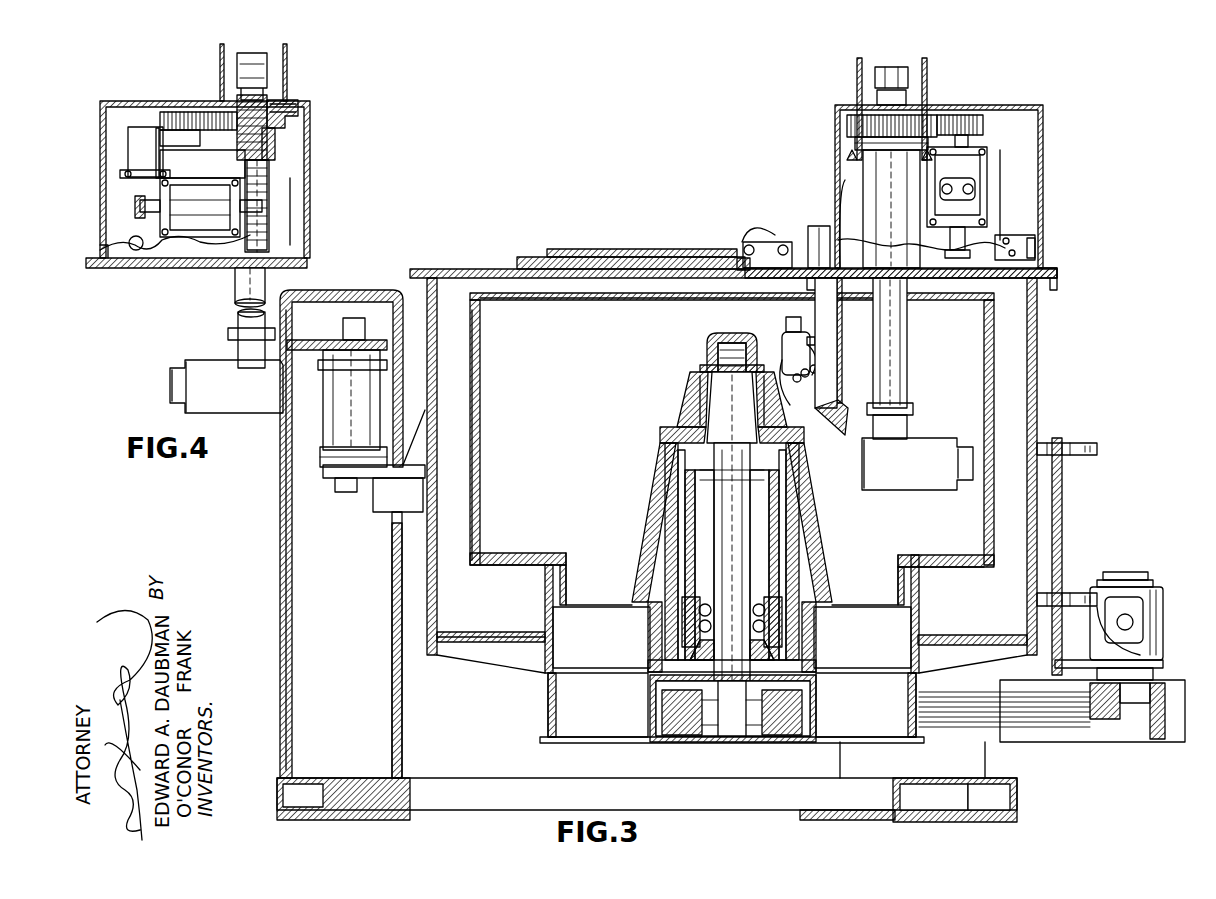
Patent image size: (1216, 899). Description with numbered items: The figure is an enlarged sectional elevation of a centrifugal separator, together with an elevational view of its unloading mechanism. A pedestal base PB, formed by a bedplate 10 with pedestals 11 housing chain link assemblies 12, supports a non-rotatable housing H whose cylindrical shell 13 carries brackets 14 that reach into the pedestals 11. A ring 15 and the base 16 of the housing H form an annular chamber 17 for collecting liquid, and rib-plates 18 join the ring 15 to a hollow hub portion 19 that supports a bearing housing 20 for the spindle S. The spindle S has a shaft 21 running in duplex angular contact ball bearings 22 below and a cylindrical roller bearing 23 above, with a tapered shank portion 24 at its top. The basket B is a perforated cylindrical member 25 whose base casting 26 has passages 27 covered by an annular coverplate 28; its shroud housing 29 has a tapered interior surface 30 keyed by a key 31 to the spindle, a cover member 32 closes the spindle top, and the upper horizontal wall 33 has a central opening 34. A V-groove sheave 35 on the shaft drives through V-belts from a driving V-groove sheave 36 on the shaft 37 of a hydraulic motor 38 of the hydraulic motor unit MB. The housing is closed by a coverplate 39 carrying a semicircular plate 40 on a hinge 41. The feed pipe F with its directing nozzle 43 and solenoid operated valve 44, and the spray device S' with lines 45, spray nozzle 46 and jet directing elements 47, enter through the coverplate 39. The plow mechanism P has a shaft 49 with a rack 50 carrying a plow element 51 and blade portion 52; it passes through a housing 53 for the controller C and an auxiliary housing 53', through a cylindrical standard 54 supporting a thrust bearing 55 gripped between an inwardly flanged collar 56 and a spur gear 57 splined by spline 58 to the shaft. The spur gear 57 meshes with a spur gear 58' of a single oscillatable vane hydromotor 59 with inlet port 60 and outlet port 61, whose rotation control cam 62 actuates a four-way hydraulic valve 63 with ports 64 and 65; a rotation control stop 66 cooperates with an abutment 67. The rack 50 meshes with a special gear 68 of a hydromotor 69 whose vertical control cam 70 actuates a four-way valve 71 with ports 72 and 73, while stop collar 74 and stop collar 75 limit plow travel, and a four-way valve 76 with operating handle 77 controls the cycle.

In FIG. 3, the bedplate 10 is at (410, 815).
In FIG. 3, the pedestals 11 is at (280, 582).
In FIG. 3, the chain link assemblies 12 is at (343, 393).
In FIG. 3, the cylindrical shell 13 is at (420, 567).
In FIG. 3, the brackets 14 is at (373, 509).
In FIG. 3, the ring 15 is at (545, 678).
In FIG. 3, the base 16 is at (484, 633).
In FIG. 3, the annular chamber 17 is at (520, 594).
In FIG. 3, the rib-plates 18 is at (598, 680).
In FIG. 3, the hollow hub portion 19 is at (650, 650).
In FIG. 3, the bearing housing 20 is at (682, 623).
In FIG. 3, the shaft 21 is at (740, 527).
In FIG. 3, the duplex angular contact ball bearings 22 is at (770, 642).
In FIG. 3, the cylindrical roller bearing 23 is at (778, 477).
In FIG. 3, the tapered shank portion 24 is at (700, 401).
In FIG. 3, the perforated cylindrical member 25 is at (481, 477).
In FIG. 3, the casting 26 is at (530, 553).
In FIG. 3, the passages 27 is at (610, 587).
In FIG. 3, the annular coverplate 28 is at (598, 553).
In FIG. 3, the shroud housing 29 is at (660, 433).
In FIG. 3, the tapered interior surface 30 is at (700, 419).
In FIG. 3, the key 31 is at (748, 383).
In FIG. 3, the cover member 32 is at (706, 350).
In FIG. 3, the upper horizontal wall 33 is at (531, 302).
In FIG. 3, the opening 34 is at (635, 302).
In FIG. 3, the V-groove sheave 35 is at (670, 740).
In FIG. 3, the driving V-groove sheave 36 is at (1100, 736).
In FIG. 3, the shaft 37 is at (1160, 669).
In FIG. 3, the hydraulic motor 38 is at (1165, 606).
In FIG. 4, the coverplate 39 is at (308, 263).
In FIG. 3, the coverplate 39 is at (470, 269).
In FIG. 3, the semicircular plate 40 is at (537, 257).
In FIG. 3, the hinge 41 is at (758, 225).
In FIG. 3, the directing nozzle 43 is at (848, 405).
In FIG. 3, the solenoid operated valve 44 is at (810, 228).
In FIG. 3, the lines 45 is at (800, 300).
In FIG. 3, the spray nozzle 46 is at (790, 391).
In FIG. 3, the jet directing elements 47 is at (816, 362).
In FIG. 4, the shaft 49 is at (234, 282).
In FIG. 3, the shaft 49 is at (908, 354).
In FIG. 4, the rack 50 is at (268, 73).
In FIG. 4, the plow element 51 is at (232, 404).
In FIG. 3, the plow element 51 is at (930, 490).
In FIG. 4, the blade portion 52 is at (172, 386).
In FIG. 3, the blade portion 52 is at (966, 482).
In FIG. 4, the housing 53 is at (223, 179).
In FIG. 3, the housing 53 is at (958, 186).
In FIG. 4, the auxiliary housing 53' is at (299, 72).
In FIG. 3, the auxiliary housing 53' is at (918, 109).
In FIG. 4, the cylindrical standard 54 is at (270, 160).
In FIG. 3, the cylindrical standard 54 is at (870, 173).
In FIG. 4, the thrust bearing 55 is at (276, 135).
In FIG. 3, the thrust bearing 55 is at (855, 146).
In FIG. 4, the inwardly flanged collar 56 is at (270, 150).
In FIG. 4, the spur gear 57 is at (290, 118).
In FIG. 3, the spur gear 57 is at (847, 127).
In FIG. 3, the spline 58 is at (858, 86).
In FIG. 4, the spur gear 58' is at (198, 105).
In FIG. 3, the spur gear 58' is at (971, 109).
In FIG. 3, the single oscillatable vane hydromotor 59 is at (975, 151).
In FIG. 3, the inlet port 60 is at (955, 186).
In FIG. 3, the outlet port 61 is at (975, 194).
In FIG. 3, the rotation control cam 62 is at (950, 280).
In FIG. 3, the four-way hydraulic valve 63 is at (995, 278).
In FIG. 3, the port 64 is at (1010, 241).
In FIG. 3, the port 65 is at (1016, 253).
In FIG. 3, the rotation control stop 66 is at (960, 125).
In FIG. 3, the abutment 67 is at (940, 140).
In FIG. 4, the special gear 68 is at (262, 187).
In FIG. 4, the hydromotor 69 is at (205, 185).
In FIG. 4, the vertical control cam 70 is at (150, 204).
In FIG. 4, the four-way valve 71 is at (145, 128).
In FIG. 4, the inlet port 72 is at (128, 172).
In FIG. 4, the outlet port 73 is at (162, 176).
In FIG. 4, the stop collar 74 is at (288, 100).
In FIG. 3, the stop collar 74 is at (850, 112).
In FIG. 4, the stop collar 75 is at (228, 338).
In FIG. 3, the stop collar 75 is at (867, 420).
In FIG. 4, the four-way valve 76 is at (110, 270).
In FIG. 4, the operating handle 77 is at (138, 252).
In FIG. 3, the basket B is at (488, 430).
In FIG. 4, the controller C is at (300, 212).
In FIG. 3, the controller C is at (1010, 189).
In FIG. 3, the feed pipe F is at (810, 189).
In FIG. 3, the housing H is at (425, 610).
In FIG. 3, the hydraulic motor unit MB is at (1142, 568).
In FIG. 4, the plow mechanism P is at (165, 360).
In FIG. 3, the plow mechanism P is at (940, 432).
In FIG. 3, the pedestal base PB is at (440, 775).
In FIG. 3, the spindle S is at (670, 589).
In FIG. 3, the spray device S' is at (766, 341).